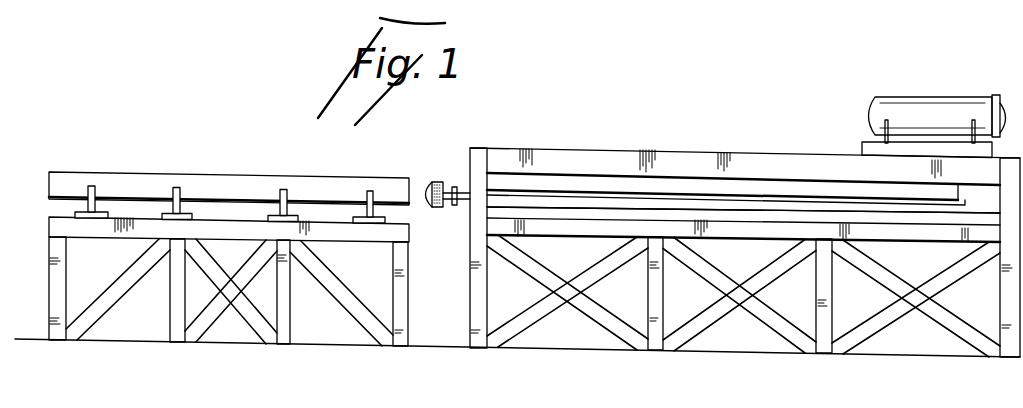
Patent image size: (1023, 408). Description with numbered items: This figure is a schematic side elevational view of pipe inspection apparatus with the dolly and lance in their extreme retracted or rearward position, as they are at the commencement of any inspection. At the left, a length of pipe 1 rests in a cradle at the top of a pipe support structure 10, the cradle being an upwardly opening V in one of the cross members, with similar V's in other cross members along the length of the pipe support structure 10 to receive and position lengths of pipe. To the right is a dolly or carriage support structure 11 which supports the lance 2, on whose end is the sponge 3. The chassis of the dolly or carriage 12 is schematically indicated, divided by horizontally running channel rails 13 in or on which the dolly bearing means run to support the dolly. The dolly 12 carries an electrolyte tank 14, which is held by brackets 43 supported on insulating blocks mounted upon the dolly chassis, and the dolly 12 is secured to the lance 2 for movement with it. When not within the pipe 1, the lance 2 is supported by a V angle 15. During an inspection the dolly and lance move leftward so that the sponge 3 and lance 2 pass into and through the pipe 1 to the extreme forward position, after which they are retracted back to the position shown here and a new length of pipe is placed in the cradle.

The pipe 1 is at (163, 172).
The lance 2 is at (462, 188).
The sponge 3 is at (437, 180).
The pipe support structure 10 is at (115, 272).
The dolly or carriage support structure 11 is at (762, 268).
The dolly or carriage chassis 12 is at (905, 187).
The channel rails 13 is at (737, 157).
The electrolyte tank 14 is at (930, 98).
The V angle 15 is at (545, 203).
The brackets 43 is at (880, 125).